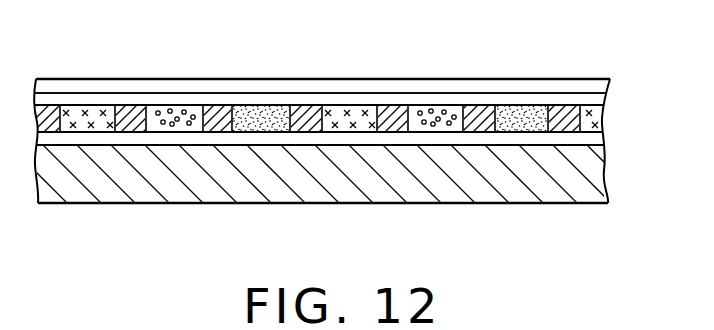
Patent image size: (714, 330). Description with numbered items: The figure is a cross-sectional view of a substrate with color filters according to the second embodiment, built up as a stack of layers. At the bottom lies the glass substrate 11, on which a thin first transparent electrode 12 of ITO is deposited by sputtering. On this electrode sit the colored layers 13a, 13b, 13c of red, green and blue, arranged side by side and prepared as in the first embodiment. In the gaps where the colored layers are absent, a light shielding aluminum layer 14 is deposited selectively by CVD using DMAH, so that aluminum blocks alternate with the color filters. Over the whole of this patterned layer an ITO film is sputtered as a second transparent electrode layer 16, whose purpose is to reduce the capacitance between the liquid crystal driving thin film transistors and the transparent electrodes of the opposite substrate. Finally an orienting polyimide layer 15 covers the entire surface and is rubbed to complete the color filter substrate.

The glass substrate 11 is at (600, 183).
The first transparent electrode 12 is at (601, 139).
The red colored layer 13a is at (531, 110).
The green colored layer 13b is at (440, 110).
The blue colored layer 13c is at (358, 110).
The light shielding aluminum layer 14 is at (573, 110).
The orienting polyimide layer 15 is at (603, 80).
The second transparent electrode layer 16 is at (601, 97).